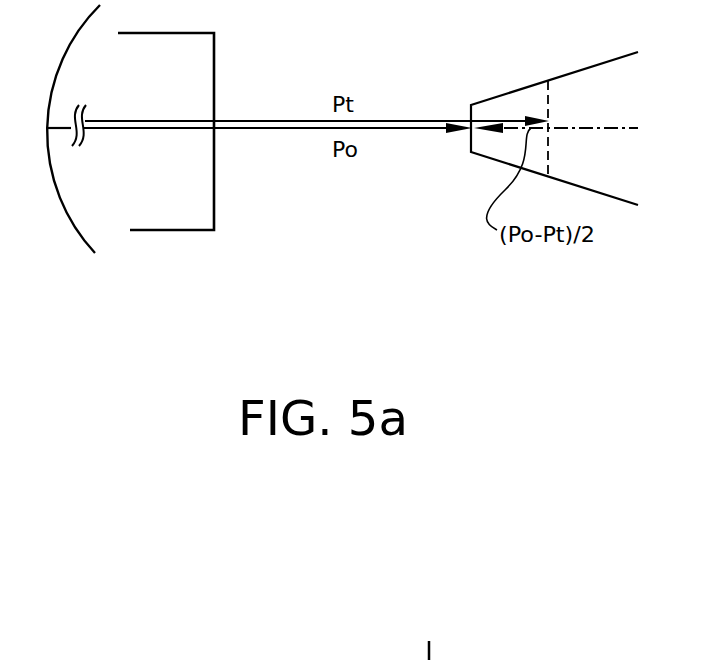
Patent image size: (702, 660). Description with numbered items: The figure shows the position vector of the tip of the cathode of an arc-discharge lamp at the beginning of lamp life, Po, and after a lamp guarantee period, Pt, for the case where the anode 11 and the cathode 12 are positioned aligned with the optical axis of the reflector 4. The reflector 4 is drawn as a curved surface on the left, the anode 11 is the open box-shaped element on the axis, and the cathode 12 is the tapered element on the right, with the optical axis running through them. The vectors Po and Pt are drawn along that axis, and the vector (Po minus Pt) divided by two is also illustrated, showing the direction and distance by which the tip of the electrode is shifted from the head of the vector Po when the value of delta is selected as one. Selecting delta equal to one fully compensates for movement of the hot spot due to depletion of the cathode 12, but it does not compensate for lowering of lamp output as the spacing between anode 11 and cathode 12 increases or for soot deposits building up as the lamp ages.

The reflector 4 is at (71, 221).
The anode 11 is at (177, 231).
The cathode 12 is at (471, 153).